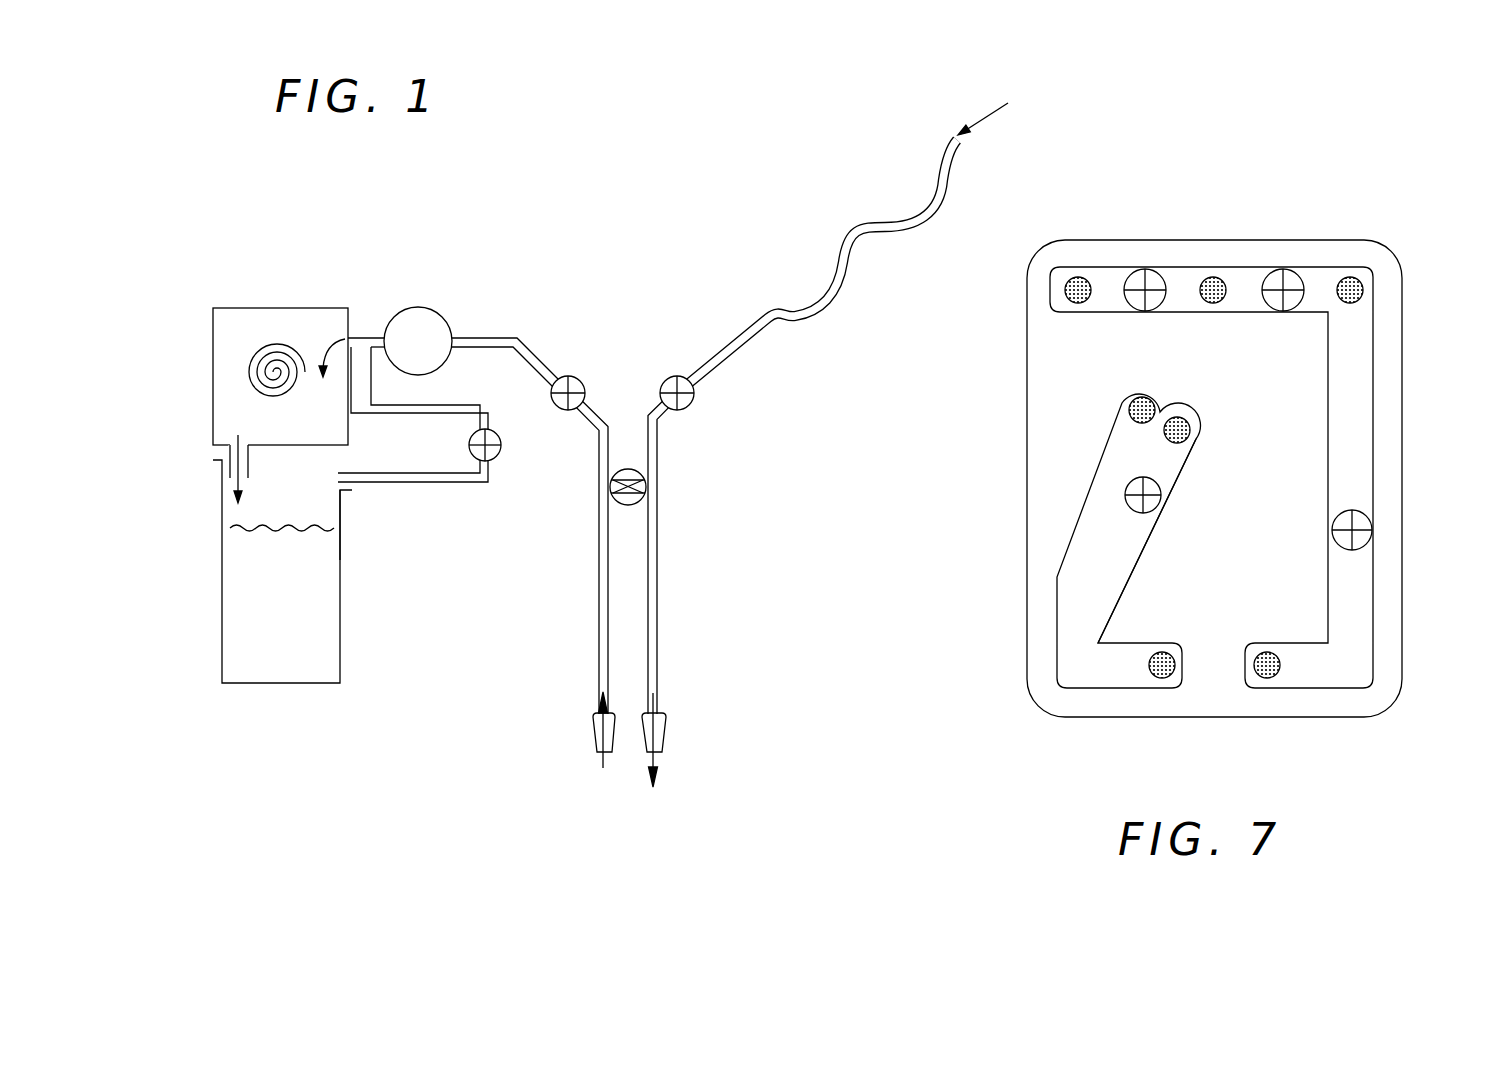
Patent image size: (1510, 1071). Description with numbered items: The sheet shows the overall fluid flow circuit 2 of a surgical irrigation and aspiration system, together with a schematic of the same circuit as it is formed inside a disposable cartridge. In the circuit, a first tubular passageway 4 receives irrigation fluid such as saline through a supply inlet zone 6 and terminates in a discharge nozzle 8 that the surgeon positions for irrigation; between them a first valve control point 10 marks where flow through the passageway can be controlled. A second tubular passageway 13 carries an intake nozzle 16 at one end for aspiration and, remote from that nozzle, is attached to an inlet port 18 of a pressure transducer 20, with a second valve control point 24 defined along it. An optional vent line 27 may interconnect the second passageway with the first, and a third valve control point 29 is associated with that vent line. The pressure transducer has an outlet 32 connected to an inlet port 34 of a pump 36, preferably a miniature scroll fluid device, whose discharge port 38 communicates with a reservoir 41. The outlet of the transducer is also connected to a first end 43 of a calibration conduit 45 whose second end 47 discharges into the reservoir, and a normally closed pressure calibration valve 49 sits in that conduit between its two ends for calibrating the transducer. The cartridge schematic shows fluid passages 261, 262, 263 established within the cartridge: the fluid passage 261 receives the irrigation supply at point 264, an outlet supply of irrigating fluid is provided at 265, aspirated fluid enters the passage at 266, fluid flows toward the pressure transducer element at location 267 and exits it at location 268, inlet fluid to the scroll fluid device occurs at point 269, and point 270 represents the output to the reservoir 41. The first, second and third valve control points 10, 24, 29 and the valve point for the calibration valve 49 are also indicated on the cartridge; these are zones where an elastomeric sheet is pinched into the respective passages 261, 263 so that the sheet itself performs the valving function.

In FIG. 1, the fluid flow circuit 2 is at (597, 248).
In FIG. 1, the first tubular passageway 4 is at (775, 320).
In FIG. 1, the supply inlet zone 6 is at (940, 132).
In FIG. 1, the discharge nozzle 8 is at (662, 737).
In FIG. 1, the first valve control point 10 is at (692, 400).
In FIG. 7, the first valve control point 10 is at (1141, 277).
In FIG. 1, the second tubular passageway 13 is at (603, 452).
In FIG. 1, the intake nozzle 16 is at (598, 727).
In FIG. 1, the inlet port 18 is at (452, 335).
In FIG. 1, the pressure transducer 20 is at (413, 327).
In FIG. 1, the second valve control point 24 is at (587, 382).
In FIG. 7, the second valve control point 24 is at (1275, 275).
In FIG. 1, the vent line 27 is at (648, 488).
In FIG. 1, the third valve control point 29 is at (633, 470).
In FIG. 7, the third valve control point 29 is at (1367, 537).
In FIG. 1, the outlet 32 is at (380, 337).
In FIG. 1, the inlet port 34 is at (340, 337).
In FIG. 1, the pump 36 is at (230, 343).
In FIG. 1, the discharge port 38 is at (222, 460).
In FIG. 1, the reservoir 41 is at (308, 598).
In FIG. 1, the first end 43 is at (370, 383).
In FIG. 1, the calibration conduit 45 is at (490, 478).
In FIG. 1, the second end 47 is at (347, 477).
In FIG. 1, the pressure calibration valve 49 is at (498, 433).
In FIG. 7, the pressure calibration valve 49 is at (1153, 503).
In FIG. 7, the fluid passage 261 is at (1353, 383).
In FIG. 7, the fluid passage 262 is at (1103, 478).
In FIG. 7, the fluid passage 263 is at (1167, 467).
In FIG. 7, the point 264 is at (1075, 279).
In FIG. 7, the outlet supply 265 is at (1205, 278).
In FIG. 7, the aspirated fluid input 266 is at (1357, 275).
In FIG. 7, the location 267 is at (1272, 673).
In FIG. 7, the location 268 is at (1157, 675).
In FIG. 7, the point 269 is at (1123, 412).
In FIG. 7, the point 270 is at (1183, 417).